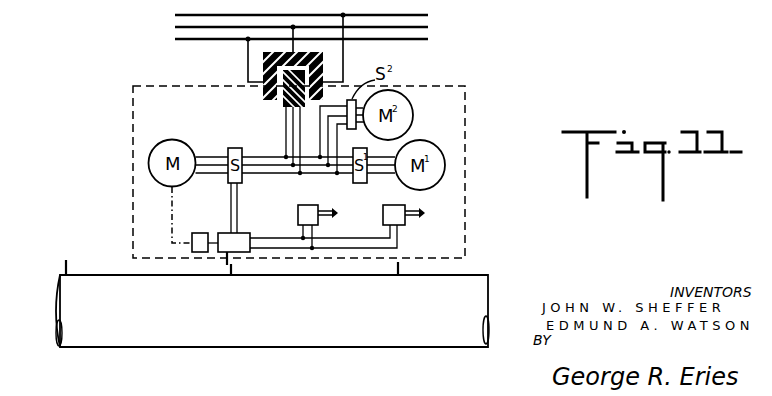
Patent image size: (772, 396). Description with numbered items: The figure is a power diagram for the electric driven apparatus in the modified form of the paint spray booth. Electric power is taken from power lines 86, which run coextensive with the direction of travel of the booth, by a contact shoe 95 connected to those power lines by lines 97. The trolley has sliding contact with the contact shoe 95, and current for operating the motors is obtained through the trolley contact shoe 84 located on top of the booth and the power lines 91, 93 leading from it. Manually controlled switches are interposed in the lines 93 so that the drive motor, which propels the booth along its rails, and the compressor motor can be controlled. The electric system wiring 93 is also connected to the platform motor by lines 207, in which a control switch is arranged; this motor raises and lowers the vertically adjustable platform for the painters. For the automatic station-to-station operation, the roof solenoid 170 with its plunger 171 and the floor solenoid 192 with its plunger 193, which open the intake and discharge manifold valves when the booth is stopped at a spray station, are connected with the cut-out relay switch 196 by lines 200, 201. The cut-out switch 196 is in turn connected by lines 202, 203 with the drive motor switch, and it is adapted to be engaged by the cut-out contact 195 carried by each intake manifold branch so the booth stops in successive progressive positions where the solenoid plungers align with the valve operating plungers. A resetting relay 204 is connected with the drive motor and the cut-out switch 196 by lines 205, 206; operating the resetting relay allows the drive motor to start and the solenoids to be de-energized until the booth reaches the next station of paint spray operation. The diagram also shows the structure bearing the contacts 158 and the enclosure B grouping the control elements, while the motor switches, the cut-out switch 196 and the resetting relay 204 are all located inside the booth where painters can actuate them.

The power lines 86 is at (417, 41).
The lines 97 is at (344, 64).
The contact shoe 95 is at (263, 95).
The trolley contact shoe 84 is at (283, 103).
The power lines 91 is at (286, 137).
The power lines 93 is at (262, 175).
The lines 207 is at (337, 140).
The lines 202 is at (231, 206).
The lines 203 is at (238, 206).
The cut-out relay switch 196 is at (243, 234).
The resetting relay 204 is at (200, 233).
The lines 205 is at (172, 225).
The solenoid 170 is at (316, 214).
The plunger 171 is at (336, 212).
The solenoid 192 is at (398, 193).
The plunger 193 is at (425, 212).
The lines 201 is at (343, 237).
The lines 200 is at (297, 250).
The lines 206 is at (205, 253).
The cut-out contact 195 is at (68, 268).
The roller 158 is at (340, 338).
The control assembly B is at (452, 152).